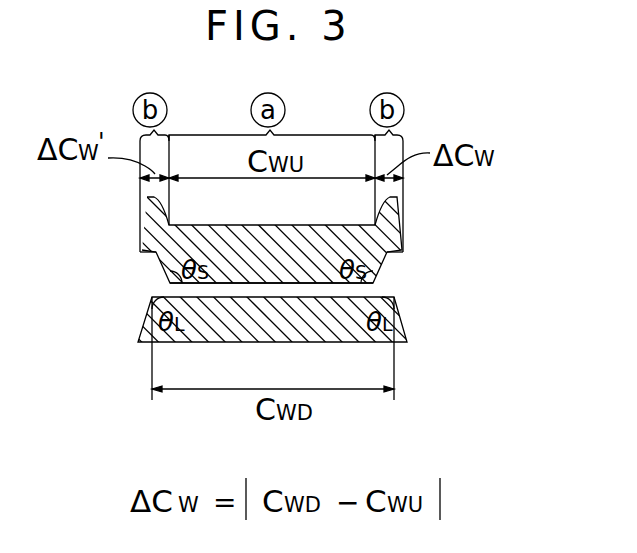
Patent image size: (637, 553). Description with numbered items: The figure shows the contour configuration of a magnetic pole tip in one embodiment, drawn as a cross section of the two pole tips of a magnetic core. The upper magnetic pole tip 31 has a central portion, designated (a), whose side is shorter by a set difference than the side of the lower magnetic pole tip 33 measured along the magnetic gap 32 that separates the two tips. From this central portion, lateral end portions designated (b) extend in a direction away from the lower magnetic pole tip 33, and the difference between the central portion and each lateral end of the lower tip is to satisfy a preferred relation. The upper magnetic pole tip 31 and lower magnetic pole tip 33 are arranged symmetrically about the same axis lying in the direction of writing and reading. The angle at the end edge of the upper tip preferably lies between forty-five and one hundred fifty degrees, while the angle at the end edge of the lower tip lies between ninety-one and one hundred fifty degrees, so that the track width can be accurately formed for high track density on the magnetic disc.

The upper magnetic pole tip 31 is at (403, 243).
The magnetic gap 32 is at (373, 288).
The lower magnetic pole tip 33 is at (398, 325).